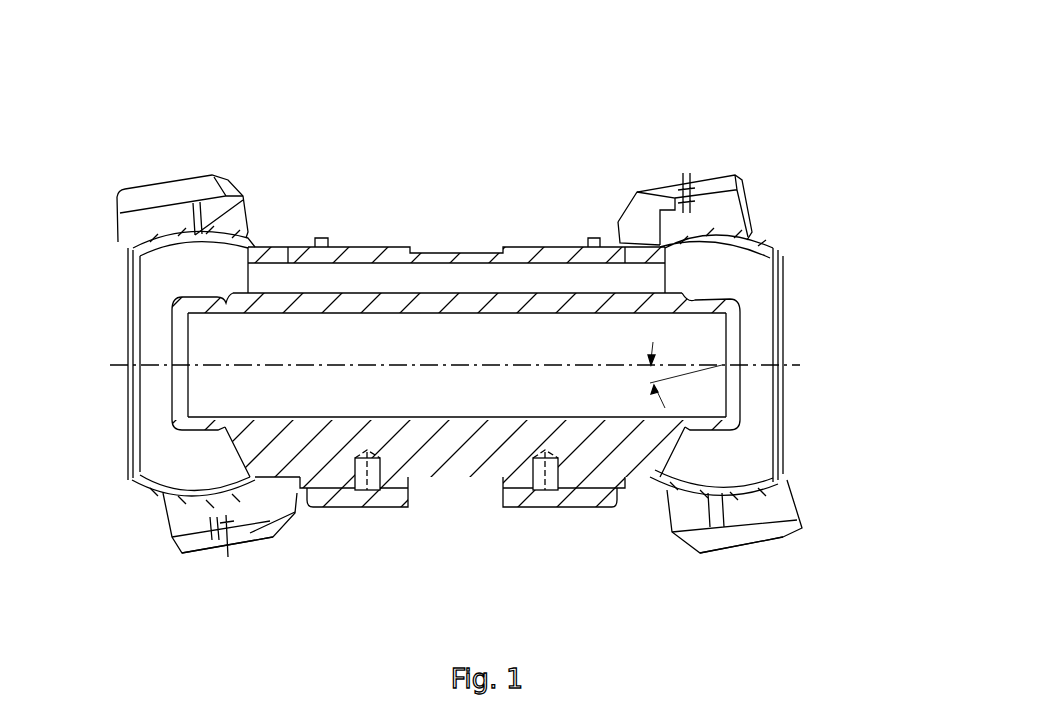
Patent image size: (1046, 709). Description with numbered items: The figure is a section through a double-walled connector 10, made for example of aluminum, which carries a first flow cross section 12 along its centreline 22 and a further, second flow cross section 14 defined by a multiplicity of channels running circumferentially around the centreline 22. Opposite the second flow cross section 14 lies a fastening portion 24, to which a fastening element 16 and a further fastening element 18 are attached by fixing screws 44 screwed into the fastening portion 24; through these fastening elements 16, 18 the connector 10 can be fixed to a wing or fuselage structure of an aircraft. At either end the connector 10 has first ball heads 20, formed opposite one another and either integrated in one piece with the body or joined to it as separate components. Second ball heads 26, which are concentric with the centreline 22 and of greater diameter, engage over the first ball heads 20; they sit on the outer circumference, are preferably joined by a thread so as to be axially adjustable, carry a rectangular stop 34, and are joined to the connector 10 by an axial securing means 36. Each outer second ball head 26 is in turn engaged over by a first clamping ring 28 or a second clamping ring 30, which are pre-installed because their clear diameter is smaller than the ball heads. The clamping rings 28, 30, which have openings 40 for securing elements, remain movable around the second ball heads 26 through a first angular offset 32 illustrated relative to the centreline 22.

The double-walled connector 10 is at (877, 157).
The first flow cross section 12 is at (424, 348).
The second flow cross section 14 is at (478, 285).
The fastening element 16 is at (327, 508).
The further fastening element 18 is at (594, 508).
The first ball heads 20 is at (183, 303).
The centreline 22 is at (793, 362).
The fastening portion 24 is at (428, 248).
The second ball heads 26 is at (142, 241).
The first clamping ring 28 is at (644, 185).
The second clamping ring 30 is at (156, 180).
The first angular offset 32 is at (643, 379).
The stop 34 is at (320, 238).
The axial securing means 36 is at (288, 246).
The openings 40 is at (690, 197).
The fixing screws 44 is at (368, 492).